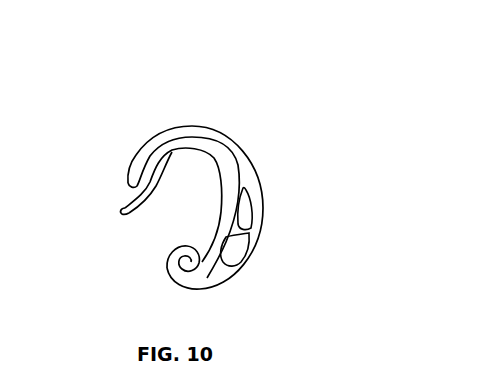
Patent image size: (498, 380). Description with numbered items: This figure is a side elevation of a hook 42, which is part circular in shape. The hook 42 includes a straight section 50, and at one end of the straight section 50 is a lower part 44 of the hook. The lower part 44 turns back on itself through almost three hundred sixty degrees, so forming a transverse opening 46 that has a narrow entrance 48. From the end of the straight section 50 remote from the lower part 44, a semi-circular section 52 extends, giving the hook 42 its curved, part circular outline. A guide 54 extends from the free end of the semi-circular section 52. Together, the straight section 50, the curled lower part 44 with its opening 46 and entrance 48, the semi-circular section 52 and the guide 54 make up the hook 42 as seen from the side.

The hook 42 is at (302, 153).
The lower part 44 is at (170, 283).
The transverse opening 46 is at (167, 257).
The narrow entrance 48 is at (199, 232).
The straight section 50 is at (222, 226).
The semi-circular section 52 is at (187, 126).
The guide 54 is at (121, 205).